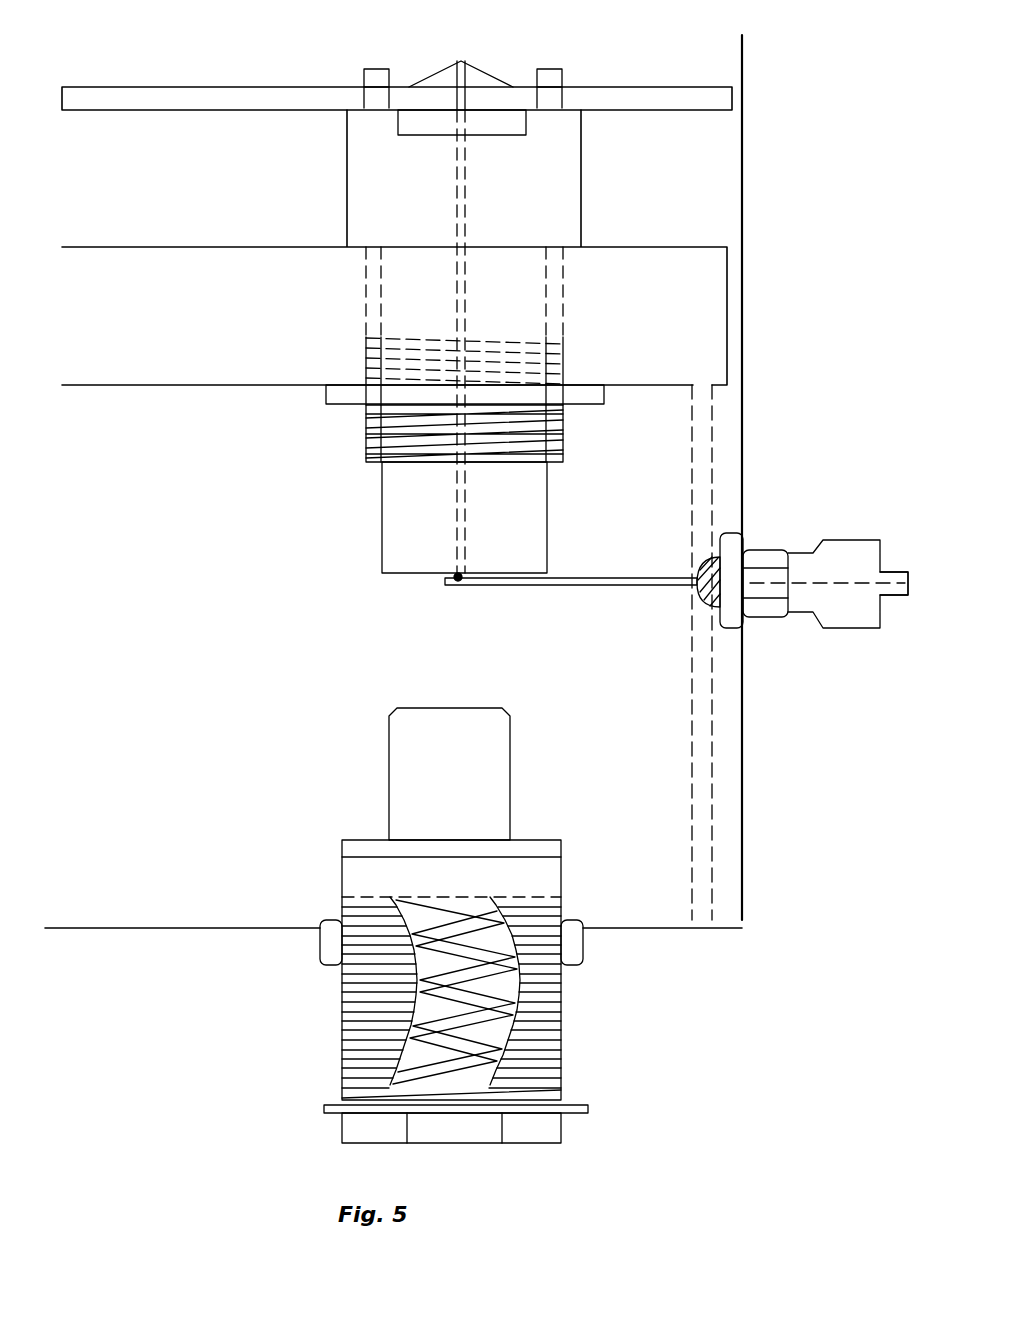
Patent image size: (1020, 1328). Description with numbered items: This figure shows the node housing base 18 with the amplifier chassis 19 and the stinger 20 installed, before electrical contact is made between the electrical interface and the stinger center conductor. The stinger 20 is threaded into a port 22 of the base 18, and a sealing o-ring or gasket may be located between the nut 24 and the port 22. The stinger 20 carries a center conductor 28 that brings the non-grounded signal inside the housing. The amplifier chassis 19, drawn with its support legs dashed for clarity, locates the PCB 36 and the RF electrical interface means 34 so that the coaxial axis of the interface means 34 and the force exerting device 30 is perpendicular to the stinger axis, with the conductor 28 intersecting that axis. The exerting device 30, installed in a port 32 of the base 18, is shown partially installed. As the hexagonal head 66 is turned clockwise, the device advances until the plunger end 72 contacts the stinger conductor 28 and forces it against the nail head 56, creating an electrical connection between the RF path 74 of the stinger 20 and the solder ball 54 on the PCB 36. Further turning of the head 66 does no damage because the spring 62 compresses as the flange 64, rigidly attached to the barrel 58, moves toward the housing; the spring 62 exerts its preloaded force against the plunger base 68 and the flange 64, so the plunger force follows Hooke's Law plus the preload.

The node base 18 is at (120, 930).
The amplifier chassis 19 is at (111, 370).
The stinger 20 is at (843, 540).
The port 22 is at (722, 627).
The nut 24 is at (770, 617).
The center conductor 28 is at (565, 587).
The force exerting device 30 is at (605, 995).
The port 32 is at (320, 945).
The RF electrical interface means 34 is at (337, 511).
The PCB 36 is at (141, 97).
The solder ball 54 is at (485, 72).
The nail head 56 is at (447, 579).
The barrel 58 is at (552, 1053).
The spring 62 is at (410, 1000).
The flange 64 is at (590, 1110).
The hexagonal head 66 is at (345, 1130).
The plunger base 68 is at (548, 880).
The plunger end 72 is at (438, 707).
The RF path 74 is at (898, 595).